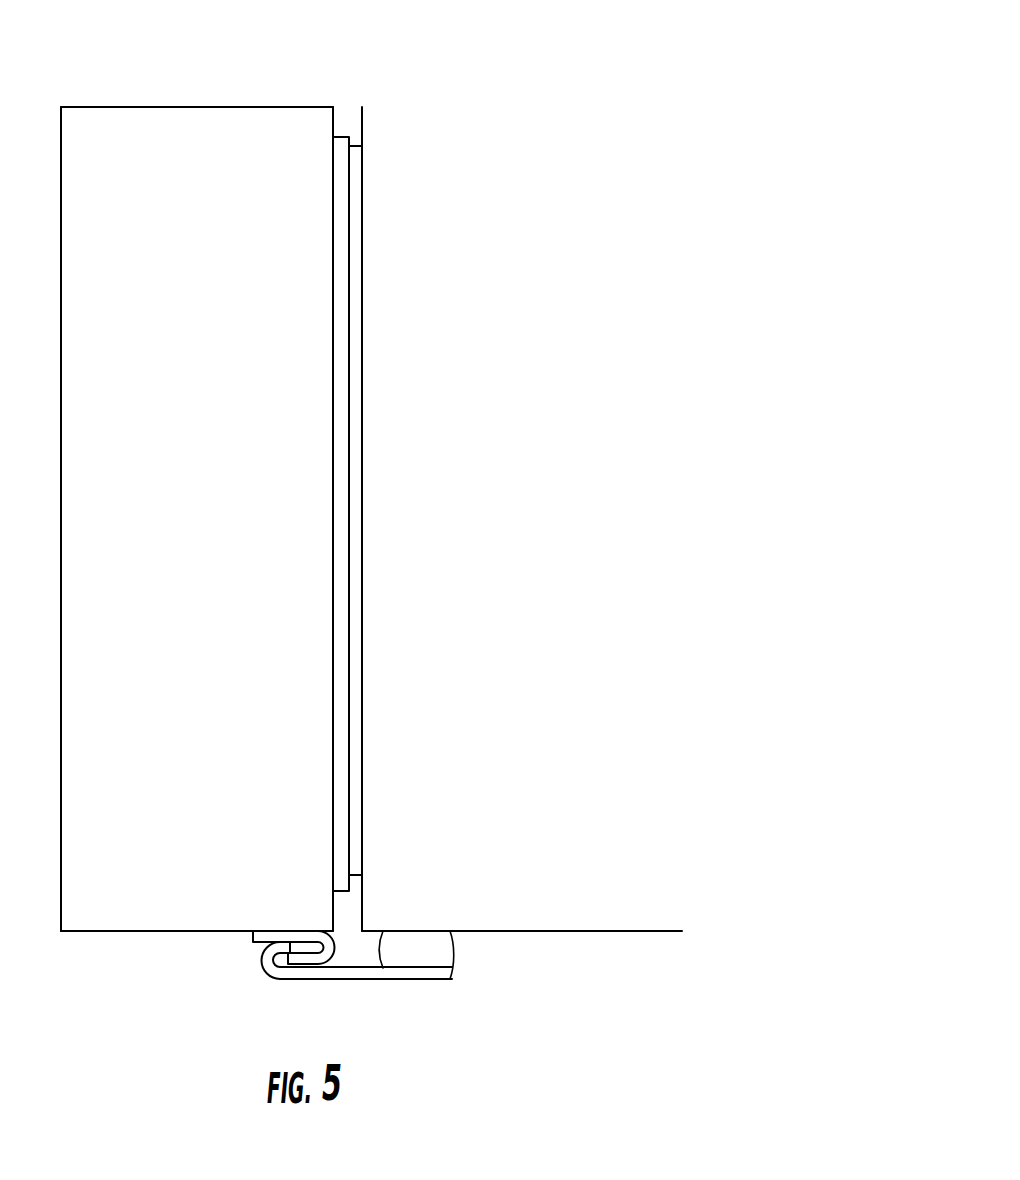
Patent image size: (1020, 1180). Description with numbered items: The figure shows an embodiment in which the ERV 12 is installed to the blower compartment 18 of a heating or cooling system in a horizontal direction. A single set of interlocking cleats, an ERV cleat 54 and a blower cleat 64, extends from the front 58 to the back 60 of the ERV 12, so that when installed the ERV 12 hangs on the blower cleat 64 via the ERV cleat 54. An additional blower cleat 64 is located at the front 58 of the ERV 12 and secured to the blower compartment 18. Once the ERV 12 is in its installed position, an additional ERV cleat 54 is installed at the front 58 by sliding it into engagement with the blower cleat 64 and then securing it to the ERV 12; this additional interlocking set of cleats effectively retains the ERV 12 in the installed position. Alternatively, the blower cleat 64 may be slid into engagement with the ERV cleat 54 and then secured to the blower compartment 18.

The ERV 12 is at (213, 531).
The blower compartment 18 is at (617, 520).
The ERV cleat 54 is at (340, 753).
The front 58 is at (181, 932).
The back 60 is at (193, 107).
The blower cleat 64 is at (355, 483).